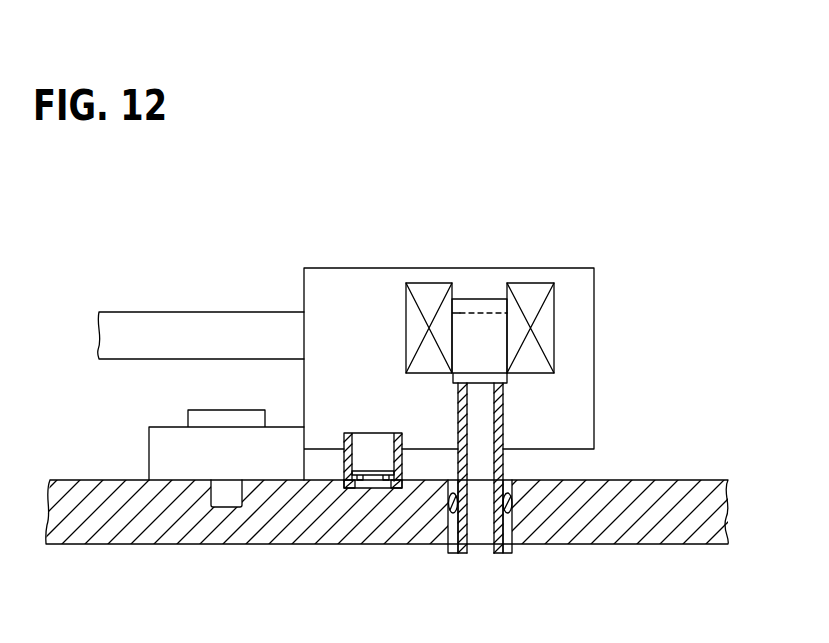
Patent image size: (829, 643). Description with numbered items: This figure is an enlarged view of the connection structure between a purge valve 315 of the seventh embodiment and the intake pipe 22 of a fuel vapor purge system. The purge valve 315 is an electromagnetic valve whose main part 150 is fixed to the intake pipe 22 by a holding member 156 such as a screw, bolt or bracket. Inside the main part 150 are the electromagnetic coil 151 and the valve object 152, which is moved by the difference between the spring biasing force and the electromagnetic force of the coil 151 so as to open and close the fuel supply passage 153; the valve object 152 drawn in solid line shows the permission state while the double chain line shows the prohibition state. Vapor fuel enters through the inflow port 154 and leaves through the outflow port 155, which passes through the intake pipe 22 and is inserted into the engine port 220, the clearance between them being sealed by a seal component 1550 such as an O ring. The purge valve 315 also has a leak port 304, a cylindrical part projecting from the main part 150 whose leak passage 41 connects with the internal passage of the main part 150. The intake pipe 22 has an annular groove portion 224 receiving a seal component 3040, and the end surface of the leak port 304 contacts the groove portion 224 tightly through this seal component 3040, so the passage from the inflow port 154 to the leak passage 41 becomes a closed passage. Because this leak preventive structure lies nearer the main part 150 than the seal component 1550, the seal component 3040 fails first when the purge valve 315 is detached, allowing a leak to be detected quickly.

The intake pipe 22 is at (90, 480).
The leak passage 41 is at (347, 485).
The main part 150 is at (348, 268).
The electromagnetic coil 151 is at (533, 283).
The valve object 152 is at (460, 313).
The fuel supply passage 153 is at (497, 410).
The inflow port 154 is at (223, 311).
The outflow port 155 is at (498, 553).
The holding member 156 is at (223, 410).
The engine port 220 is at (507, 553).
The annular groove portion 224 is at (344, 481).
The leak port 304 is at (402, 462).
The purge valve 315 is at (492, 383).
The seal component 1550 is at (512, 505).
The seal component 3040 is at (349, 486).